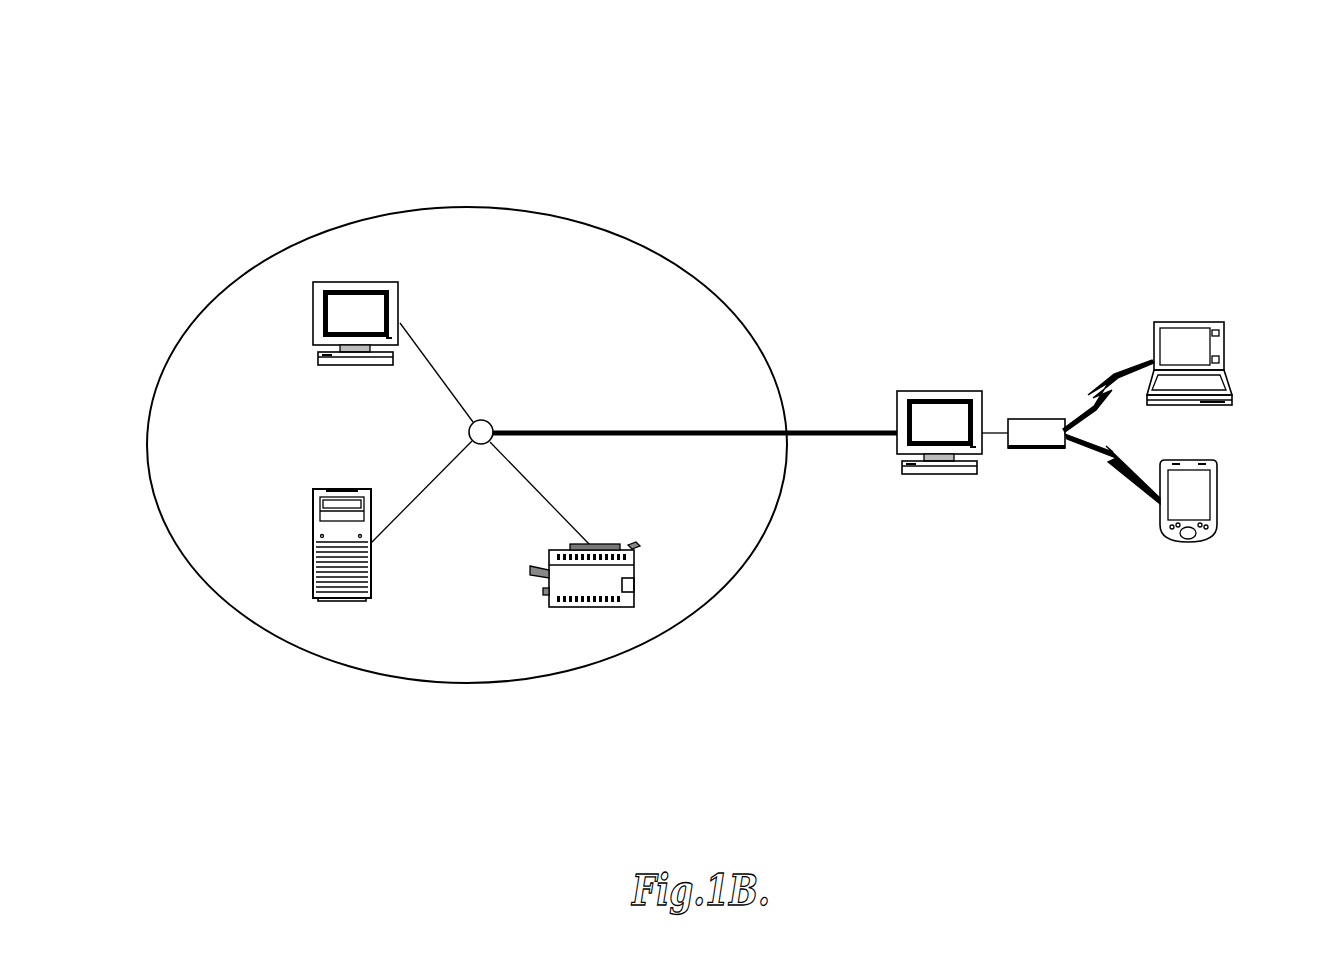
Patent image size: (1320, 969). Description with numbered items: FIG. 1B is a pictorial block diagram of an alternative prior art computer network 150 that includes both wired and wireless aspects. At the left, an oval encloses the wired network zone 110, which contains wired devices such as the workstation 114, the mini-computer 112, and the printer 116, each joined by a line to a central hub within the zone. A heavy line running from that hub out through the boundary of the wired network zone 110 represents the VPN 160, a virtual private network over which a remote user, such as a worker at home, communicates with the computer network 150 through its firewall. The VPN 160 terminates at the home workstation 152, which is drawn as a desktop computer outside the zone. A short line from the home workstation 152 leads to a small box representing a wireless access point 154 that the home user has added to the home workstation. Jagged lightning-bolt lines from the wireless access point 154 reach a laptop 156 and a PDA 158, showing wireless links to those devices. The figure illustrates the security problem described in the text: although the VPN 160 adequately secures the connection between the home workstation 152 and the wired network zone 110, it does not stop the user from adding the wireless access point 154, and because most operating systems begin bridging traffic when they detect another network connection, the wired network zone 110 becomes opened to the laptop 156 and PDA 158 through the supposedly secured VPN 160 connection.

The computer network 150 is at (228, 120).
The wired network zone 110 is at (482, 210).
The mini-computer 112 is at (340, 489).
The workstation 114 is at (378, 283).
The printer 116 is at (620, 545).
The home workstation 152 is at (938, 391).
The wireless access point 154 is at (1030, 449).
The laptop 156 is at (1190, 322).
The PDA 158 is at (1218, 473).
The VPN 160 is at (840, 428).